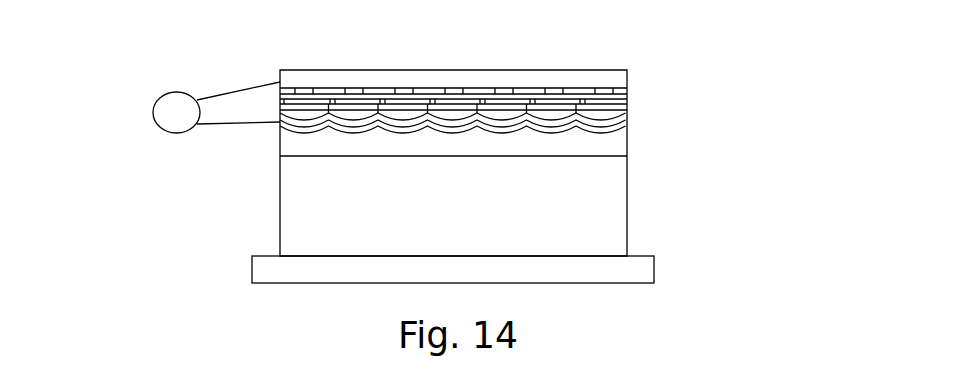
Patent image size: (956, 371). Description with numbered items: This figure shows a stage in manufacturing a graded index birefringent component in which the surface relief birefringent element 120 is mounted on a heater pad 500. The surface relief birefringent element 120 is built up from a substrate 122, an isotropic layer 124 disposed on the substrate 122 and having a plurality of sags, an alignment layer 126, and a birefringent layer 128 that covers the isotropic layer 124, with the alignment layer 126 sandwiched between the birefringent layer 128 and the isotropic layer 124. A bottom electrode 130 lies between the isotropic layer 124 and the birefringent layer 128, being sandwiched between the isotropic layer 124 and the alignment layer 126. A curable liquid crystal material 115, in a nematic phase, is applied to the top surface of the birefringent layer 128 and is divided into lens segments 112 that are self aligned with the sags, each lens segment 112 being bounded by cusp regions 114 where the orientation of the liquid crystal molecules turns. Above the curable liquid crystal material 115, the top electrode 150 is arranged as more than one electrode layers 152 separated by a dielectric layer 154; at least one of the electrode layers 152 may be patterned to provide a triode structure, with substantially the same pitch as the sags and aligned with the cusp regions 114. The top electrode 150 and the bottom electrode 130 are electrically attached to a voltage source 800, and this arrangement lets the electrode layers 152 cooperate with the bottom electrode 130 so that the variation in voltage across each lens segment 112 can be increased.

The voltage source 800 is at (177, 92).
The lens segment 112 is at (453, 102).
The cusp region 114 is at (530, 113).
The electrode layer 152 is at (628, 84).
The dielectric layer 154 is at (628, 94).
The top electrode 150 is at (553, 67).
The curable liquid crystal material 115 is at (628, 115).
The bottom electrode 130 is at (628, 132).
The birefringent layer 128 is at (280, 121).
The alignment layer 126 is at (280, 128).
The isotropic layer 124 is at (287, 152).
The substrate 122 is at (165, 140).
The surface relief birefringent element 120 is at (359, 184).
The heater pad 500 is at (655, 268).